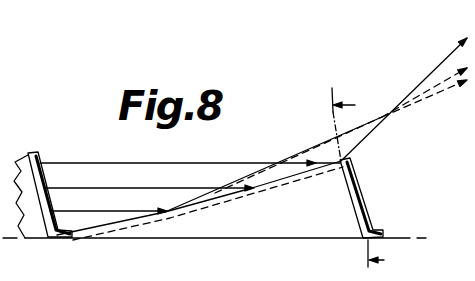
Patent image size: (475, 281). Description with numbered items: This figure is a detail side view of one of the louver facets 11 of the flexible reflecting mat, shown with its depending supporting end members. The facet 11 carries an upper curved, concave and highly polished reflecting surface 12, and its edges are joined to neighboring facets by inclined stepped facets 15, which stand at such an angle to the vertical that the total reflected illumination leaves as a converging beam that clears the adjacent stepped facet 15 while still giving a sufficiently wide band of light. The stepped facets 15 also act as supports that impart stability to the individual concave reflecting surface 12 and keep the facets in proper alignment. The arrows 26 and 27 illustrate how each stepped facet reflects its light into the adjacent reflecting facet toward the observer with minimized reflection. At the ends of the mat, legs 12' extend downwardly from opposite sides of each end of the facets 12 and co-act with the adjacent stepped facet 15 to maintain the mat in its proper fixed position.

The louver facet 11 is at (177, 250).
The reflecting surface 12 is at (266, 188).
The leg 12' is at (227, 191).
The stepped facet 15 is at (38, 158).
The arrow 26 is at (168, 163).
The arrow 27 is at (425, 70).